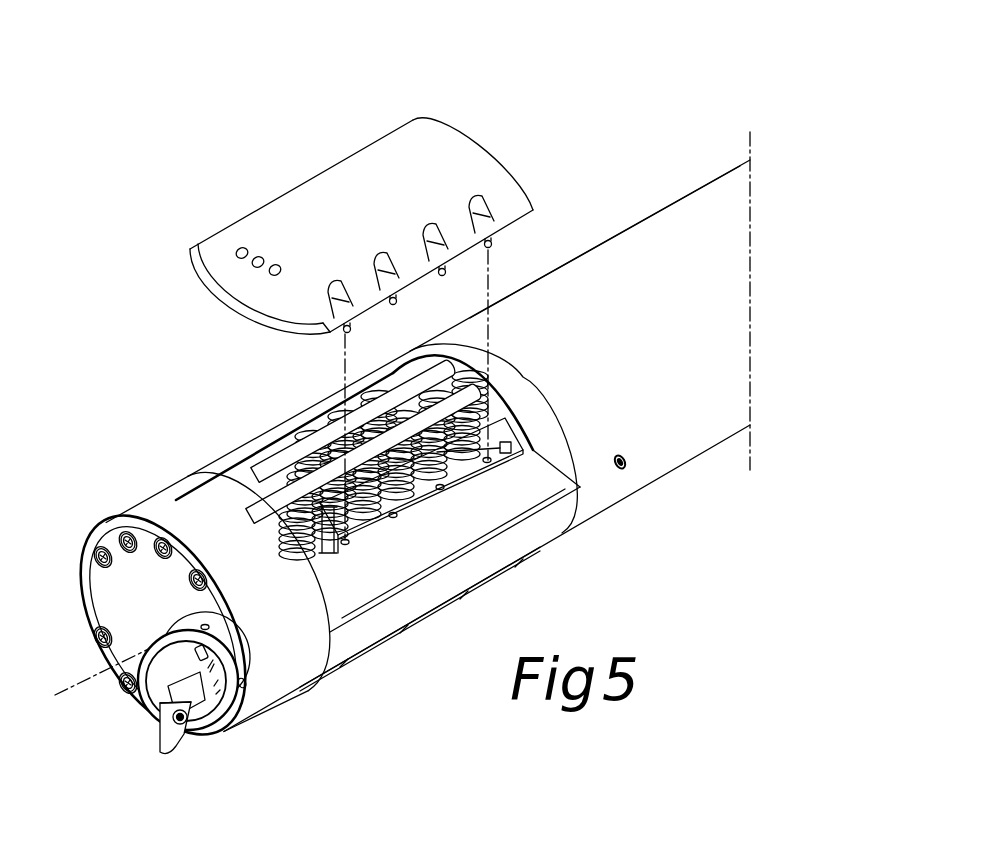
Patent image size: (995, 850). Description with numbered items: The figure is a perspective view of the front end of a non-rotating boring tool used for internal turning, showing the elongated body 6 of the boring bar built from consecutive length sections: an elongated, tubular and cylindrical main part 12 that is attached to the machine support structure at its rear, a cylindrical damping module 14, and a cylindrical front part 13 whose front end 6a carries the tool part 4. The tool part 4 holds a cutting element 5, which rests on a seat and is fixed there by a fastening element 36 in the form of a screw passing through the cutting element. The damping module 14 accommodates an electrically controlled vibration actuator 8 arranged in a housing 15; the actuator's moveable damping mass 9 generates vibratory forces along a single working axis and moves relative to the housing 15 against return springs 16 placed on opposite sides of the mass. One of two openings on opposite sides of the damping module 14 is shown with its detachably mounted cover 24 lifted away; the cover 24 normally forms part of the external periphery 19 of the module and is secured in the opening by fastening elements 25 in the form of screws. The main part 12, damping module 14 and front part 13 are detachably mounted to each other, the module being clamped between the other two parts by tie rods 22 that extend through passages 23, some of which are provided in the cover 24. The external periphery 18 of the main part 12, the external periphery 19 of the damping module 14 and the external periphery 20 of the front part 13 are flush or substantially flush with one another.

The tool part 4 is at (250, 683).
The cutting element 5 is at (184, 721).
The elongated body 6 is at (690, 184).
The front end 6a is at (125, 515).
The vibration actuator 8 is at (490, 437).
The damping mass 9 is at (450, 457).
The main part 12 is at (635, 257).
The front part 13 is at (175, 510).
The damping module 14 is at (513, 537).
The housing 15 is at (550, 433).
The return springs 16 is at (407, 480).
The external periphery 18 is at (560, 277).
The external periphery 19 is at (553, 533).
The external periphery 20 is at (294, 683).
The tie rods 22 is at (478, 390).
The passages 23 is at (240, 254).
The cover 24 is at (272, 218).
The fastening elements 25 is at (493, 217).
The fastening element 36 is at (176, 713).